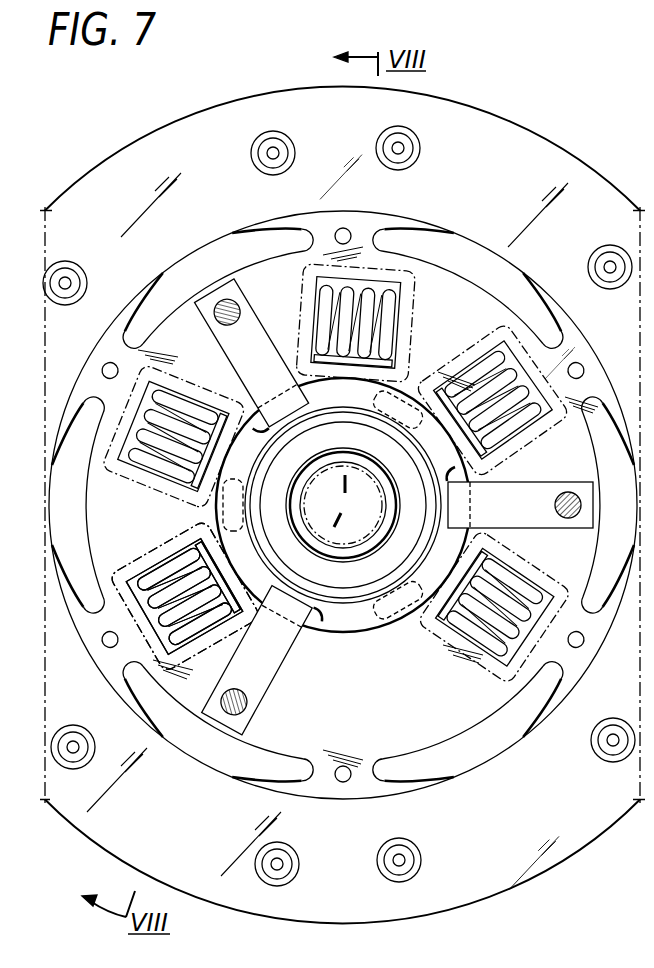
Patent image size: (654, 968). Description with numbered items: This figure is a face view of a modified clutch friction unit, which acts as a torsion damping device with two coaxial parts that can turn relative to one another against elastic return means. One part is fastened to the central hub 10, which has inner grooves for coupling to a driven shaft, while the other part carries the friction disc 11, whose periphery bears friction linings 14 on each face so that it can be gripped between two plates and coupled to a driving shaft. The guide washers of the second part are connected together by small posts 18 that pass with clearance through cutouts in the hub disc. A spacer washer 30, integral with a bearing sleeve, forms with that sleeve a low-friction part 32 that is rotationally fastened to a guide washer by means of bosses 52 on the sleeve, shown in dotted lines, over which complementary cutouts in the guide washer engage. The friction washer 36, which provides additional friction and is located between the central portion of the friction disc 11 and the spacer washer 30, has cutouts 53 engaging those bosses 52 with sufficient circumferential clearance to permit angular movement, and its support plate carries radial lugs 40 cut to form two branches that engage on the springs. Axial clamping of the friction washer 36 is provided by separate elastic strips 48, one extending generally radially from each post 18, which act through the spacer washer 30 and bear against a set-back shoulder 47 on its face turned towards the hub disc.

The hub 10 is at (377, 468).
The friction disc 11 is at (120, 549).
The friction linings 14 is at (152, 152).
The posts 18 is at (217, 302).
The spacer washer 30 is at (468, 552).
The part 32 is at (226, 635).
The friction washer 36 is at (408, 340).
The radial lugs 40 is at (316, 334).
The shoulder 47 is at (261, 409).
The elastic strips 48 is at (519, 513).
The bosses 52 is at (230, 512).
The cutouts 53 is at (406, 392).